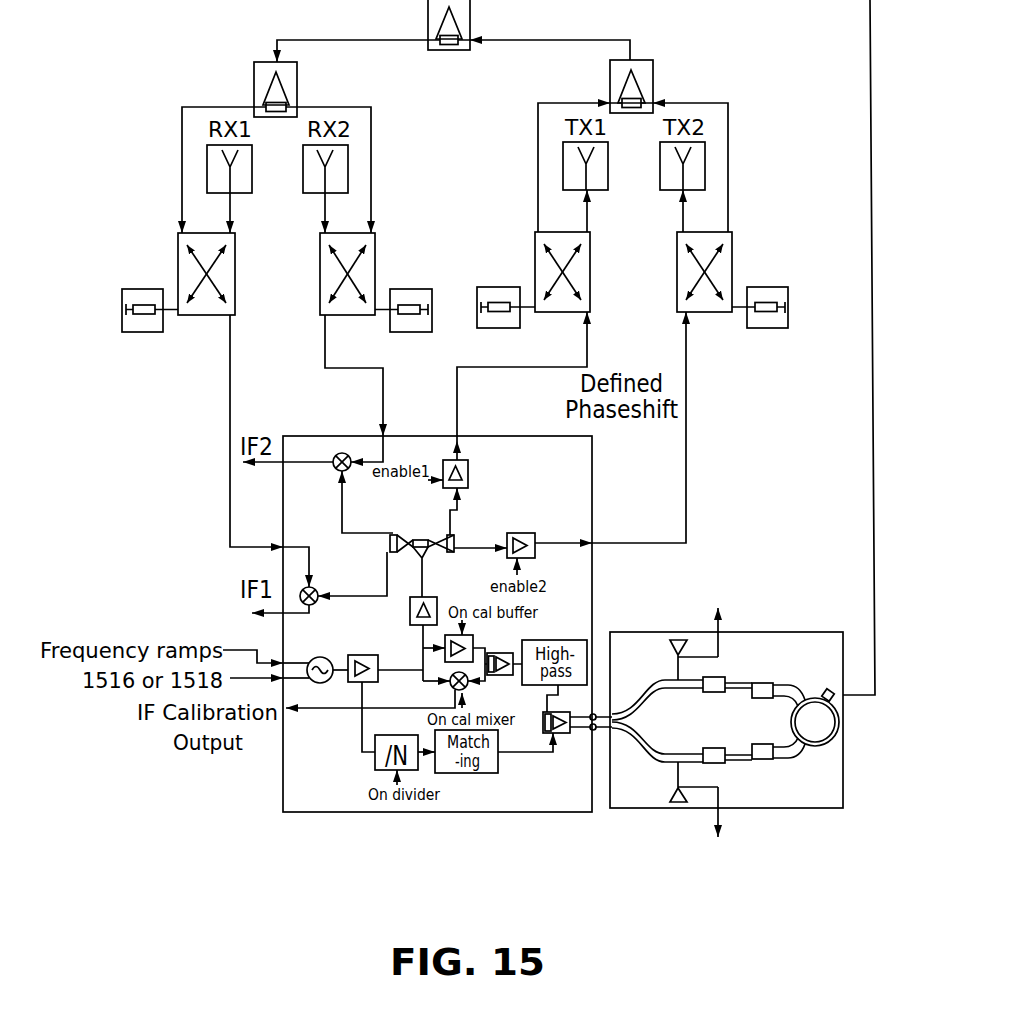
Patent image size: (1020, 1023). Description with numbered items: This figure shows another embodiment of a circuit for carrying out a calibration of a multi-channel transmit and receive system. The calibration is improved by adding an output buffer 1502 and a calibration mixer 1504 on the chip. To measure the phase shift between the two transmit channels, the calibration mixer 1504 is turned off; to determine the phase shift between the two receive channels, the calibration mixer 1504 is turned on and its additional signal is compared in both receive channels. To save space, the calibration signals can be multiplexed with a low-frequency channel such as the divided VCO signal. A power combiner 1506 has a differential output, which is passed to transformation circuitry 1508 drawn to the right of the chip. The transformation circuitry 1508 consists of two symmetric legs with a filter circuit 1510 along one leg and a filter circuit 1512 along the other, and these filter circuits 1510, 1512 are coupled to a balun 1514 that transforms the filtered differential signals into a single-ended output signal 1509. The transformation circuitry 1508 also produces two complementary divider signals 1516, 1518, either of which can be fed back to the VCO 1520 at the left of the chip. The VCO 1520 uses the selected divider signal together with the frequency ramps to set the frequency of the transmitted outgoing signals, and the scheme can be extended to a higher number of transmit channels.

The output buffer 1502 is at (474, 646).
The calibration mixer 1504 is at (468, 689).
The power combiner 1506 is at (564, 740).
The transformation circuitry 1508 is at (843, 748).
The single-ended output signal 1509 is at (855, 697).
The filter circuit 1510 is at (740, 666).
The filter circuit 1512 is at (745, 772).
The balun 1514 is at (792, 720).
The divider signal 1516 is at (716, 620).
The divider signal 1518 is at (717, 827).
The VCO 1520 is at (323, 657).